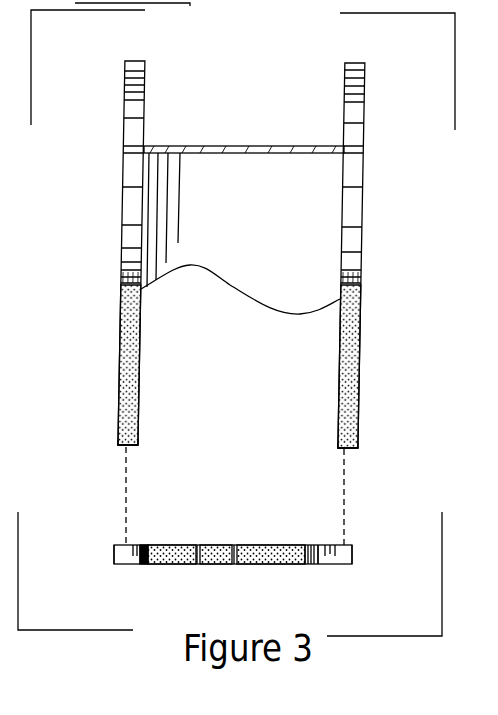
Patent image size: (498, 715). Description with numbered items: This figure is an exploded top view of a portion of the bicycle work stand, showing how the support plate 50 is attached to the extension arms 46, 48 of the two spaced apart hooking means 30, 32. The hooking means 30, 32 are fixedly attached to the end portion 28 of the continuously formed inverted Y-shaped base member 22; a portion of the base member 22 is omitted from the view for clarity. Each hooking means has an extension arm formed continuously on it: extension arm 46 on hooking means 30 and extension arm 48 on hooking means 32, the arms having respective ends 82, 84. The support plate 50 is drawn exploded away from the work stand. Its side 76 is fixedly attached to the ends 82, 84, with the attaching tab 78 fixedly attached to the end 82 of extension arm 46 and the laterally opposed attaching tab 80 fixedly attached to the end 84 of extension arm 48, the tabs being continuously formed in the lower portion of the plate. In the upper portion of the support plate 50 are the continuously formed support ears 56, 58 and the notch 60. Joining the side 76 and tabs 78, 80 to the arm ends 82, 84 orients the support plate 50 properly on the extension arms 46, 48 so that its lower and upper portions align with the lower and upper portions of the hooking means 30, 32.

The base member 22 is at (195, 147).
The end portion 28 is at (253, 229).
The hooking means 30 is at (111, 248).
The hooking means 32 is at (371, 245).
The extension arm 46 is at (118, 393).
The extension arm 48 is at (346, 394).
The support plate 50 is at (231, 529).
The support ear 56 is at (163, 565).
The support ear 58 is at (308, 567).
The notch 60 is at (236, 545).
The side 76 is at (137, 545).
The attaching tab 78 is at (114, 553).
The laterally opposed attaching tab 80 is at (352, 550).
The end 82 is at (120, 447).
The end 84 is at (350, 448).